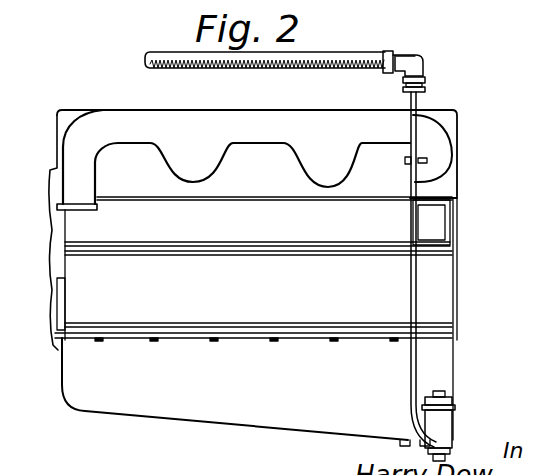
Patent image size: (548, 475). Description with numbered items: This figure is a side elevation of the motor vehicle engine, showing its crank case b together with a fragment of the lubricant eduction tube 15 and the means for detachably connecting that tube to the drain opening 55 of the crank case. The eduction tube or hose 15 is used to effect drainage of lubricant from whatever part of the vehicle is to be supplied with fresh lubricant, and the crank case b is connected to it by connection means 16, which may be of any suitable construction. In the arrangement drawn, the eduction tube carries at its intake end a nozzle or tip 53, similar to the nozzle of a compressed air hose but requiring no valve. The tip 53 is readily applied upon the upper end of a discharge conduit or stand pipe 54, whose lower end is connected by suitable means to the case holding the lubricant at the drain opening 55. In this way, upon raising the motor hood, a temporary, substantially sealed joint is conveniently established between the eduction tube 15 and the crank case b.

The crank case b is at (230, 415).
The eduction tube 15 is at (207, 62).
The connection means 16 is at (430, 300).
The nozzle 53 is at (426, 66).
The stand pipe 54 is at (423, 103).
The drain opening 55 is at (441, 447).